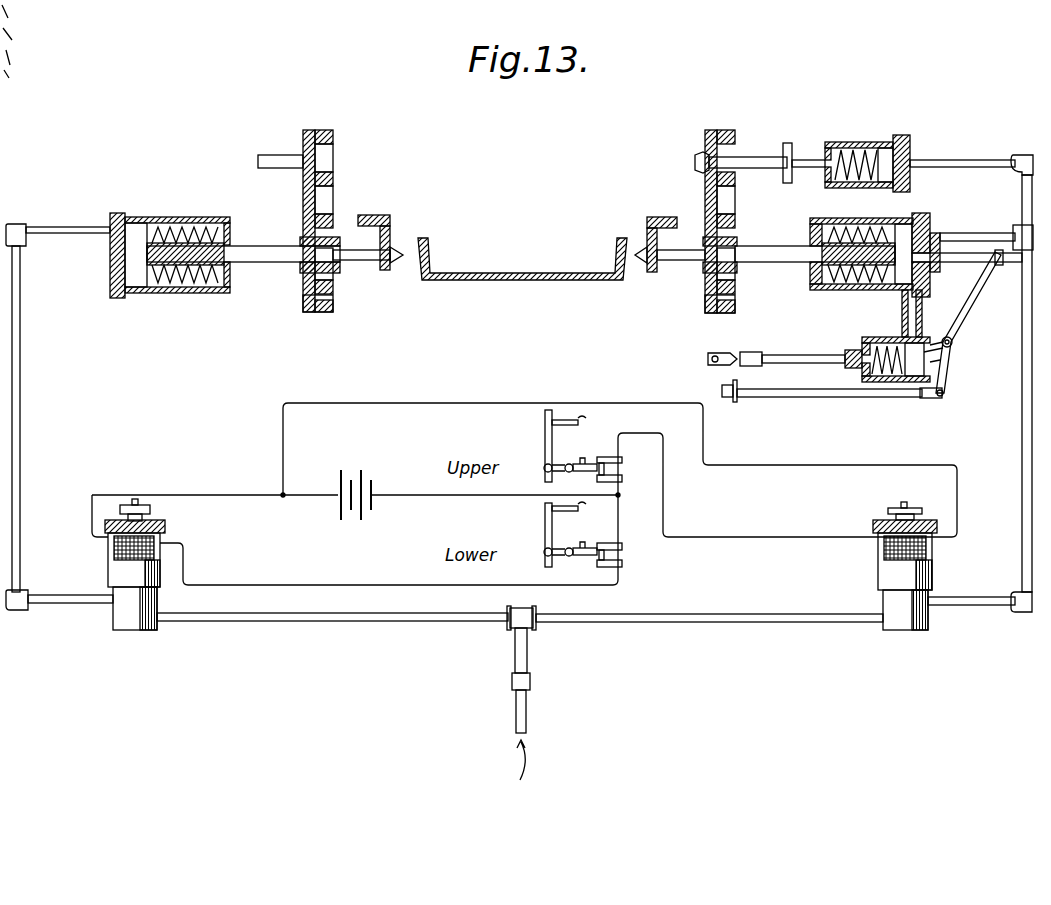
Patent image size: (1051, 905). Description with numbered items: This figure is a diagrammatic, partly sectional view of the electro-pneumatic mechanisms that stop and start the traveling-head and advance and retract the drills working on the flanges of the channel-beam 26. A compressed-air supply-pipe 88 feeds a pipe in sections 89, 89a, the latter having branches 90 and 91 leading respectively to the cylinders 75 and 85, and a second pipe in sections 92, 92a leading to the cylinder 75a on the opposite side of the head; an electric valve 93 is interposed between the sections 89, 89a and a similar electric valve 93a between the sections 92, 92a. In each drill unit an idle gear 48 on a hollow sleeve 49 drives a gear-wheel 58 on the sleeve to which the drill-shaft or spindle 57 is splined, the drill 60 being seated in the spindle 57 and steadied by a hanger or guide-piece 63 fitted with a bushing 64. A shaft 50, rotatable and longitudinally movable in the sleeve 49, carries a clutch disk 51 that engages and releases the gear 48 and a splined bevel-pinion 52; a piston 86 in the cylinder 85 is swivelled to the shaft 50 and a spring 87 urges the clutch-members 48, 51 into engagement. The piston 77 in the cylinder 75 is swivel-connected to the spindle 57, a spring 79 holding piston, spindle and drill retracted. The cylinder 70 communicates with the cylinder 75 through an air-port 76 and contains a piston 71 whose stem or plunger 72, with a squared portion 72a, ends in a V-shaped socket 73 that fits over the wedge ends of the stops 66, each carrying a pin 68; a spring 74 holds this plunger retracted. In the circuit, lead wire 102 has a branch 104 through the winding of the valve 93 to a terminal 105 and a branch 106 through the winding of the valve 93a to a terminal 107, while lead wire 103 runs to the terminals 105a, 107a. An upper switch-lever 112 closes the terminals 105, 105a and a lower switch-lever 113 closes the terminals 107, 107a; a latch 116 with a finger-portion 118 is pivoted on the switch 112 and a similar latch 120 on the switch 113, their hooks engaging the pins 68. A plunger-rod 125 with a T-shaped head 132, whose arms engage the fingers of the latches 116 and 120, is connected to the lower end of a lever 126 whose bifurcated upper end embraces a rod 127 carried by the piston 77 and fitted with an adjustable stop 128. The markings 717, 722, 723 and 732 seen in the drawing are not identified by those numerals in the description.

The channel-beam 26 is at (522, 259).
The idle gear 48 is at (315, 133).
The hollow stub-shaft or sleeve 49 is at (752, 157).
The shaft 50 is at (812, 170).
The clutch-member or disk 51 is at (700, 160).
The bevel-pinion 52 is at (790, 143).
The drill-shaft or spindle 57 is at (262, 246).
The gear-wheel 58 is at (333, 306).
The drill 60 is at (366, 263).
The hanger or guide-piece 63 is at (386, 216).
The bushing 64 is at (397, 266).
The stop 66 is at (712, 352).
The lug or pin 68 is at (710, 362).
The cylinder 70 is at (868, 338).
The piston 71 is at (905, 370).
The stem or plunger 72 is at (798, 355).
The squared portion of plunger stem 72a is at (757, 366).
The V-shaped socket 73 is at (748, 352).
The spring 74 is at (880, 372).
The cylinder 75 is at (868, 218).
The cylinder 75a is at (195, 228).
The air-port 76 is at (902, 312).
The piston 77 is at (137, 226).
The spring 79 is at (190, 286).
The cylinder 85 is at (852, 142).
The piston 86 is at (898, 145).
The spring 87 is at (842, 188).
The compressed-air supply-pipe 88 is at (515, 717).
The pipe section 89 is at (776, 624).
The pipe section 89a is at (1021, 438).
The branch 90 is at (985, 233).
The branch 91 is at (975, 160).
The pipe section 92 is at (280, 622).
The pipe section 92a is at (21, 346).
The electric valve 93 is at (880, 573).
The electric valve 93a is at (112, 573).
The lead wire 102 is at (306, 495).
The lead wire 103 is at (415, 495).
The branch wire 104 is at (455, 403).
The terminal 105 is at (603, 457).
The terminal 105a is at (628, 470).
The branch wire 106 is at (190, 495).
The terminal 107 is at (607, 567).
The terminal 107a is at (607, 545).
The upper switch-lever 112 is at (576, 472).
The lower switch-lever 113 is at (575, 558).
The latch 116 is at (553, 462).
The finger-portion 118 is at (545, 420).
The latch 120 is at (552, 542).
The plunger-rod 125 is at (820, 397).
The lever 126 is at (952, 360).
The rod 127 is at (947, 263).
The adjustable stop 128 is at (976, 290).
The T-shaped head 132 is at (733, 395).
The pivot 717 is at (540, 430).
The pivot 722 is at (540, 522).
The contact strip 723 is at (543, 508).
The rod end 732 is at (543, 418).